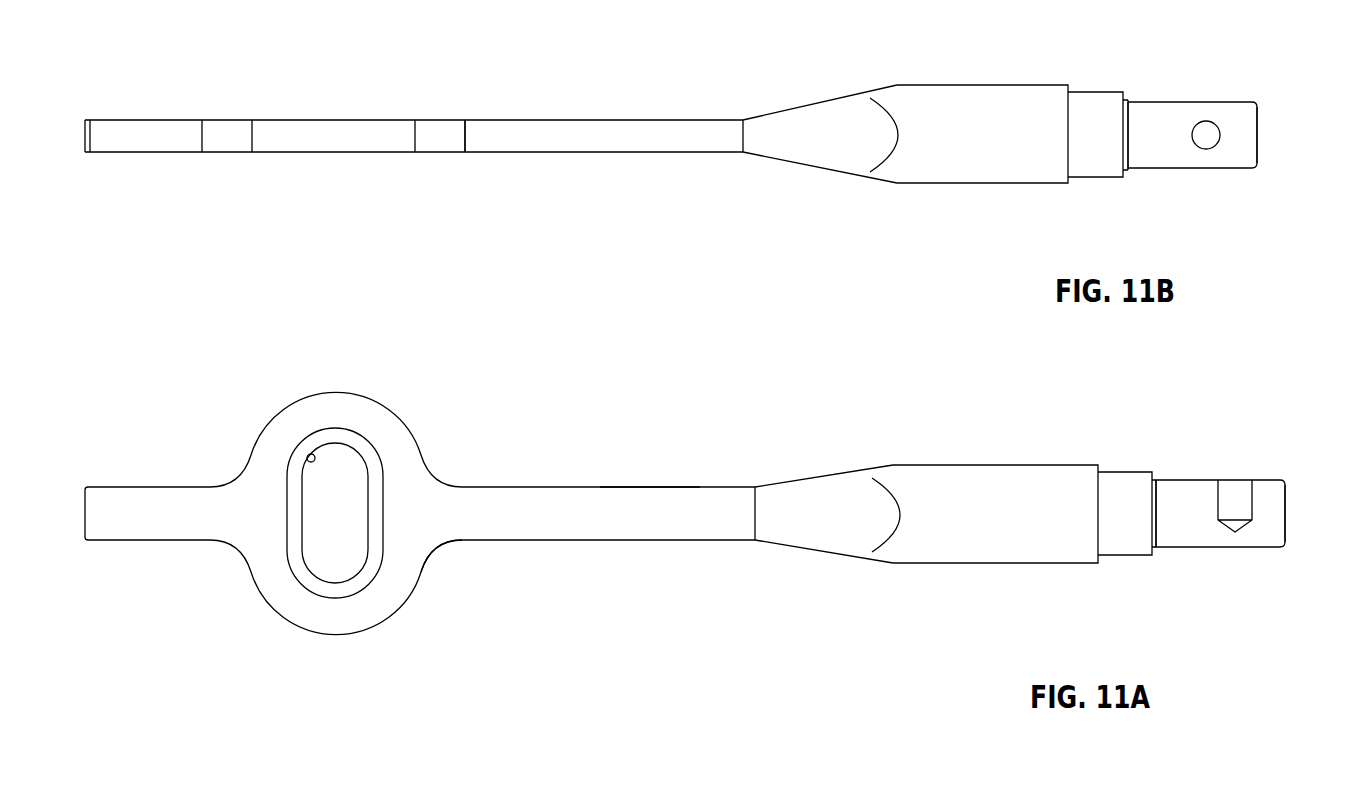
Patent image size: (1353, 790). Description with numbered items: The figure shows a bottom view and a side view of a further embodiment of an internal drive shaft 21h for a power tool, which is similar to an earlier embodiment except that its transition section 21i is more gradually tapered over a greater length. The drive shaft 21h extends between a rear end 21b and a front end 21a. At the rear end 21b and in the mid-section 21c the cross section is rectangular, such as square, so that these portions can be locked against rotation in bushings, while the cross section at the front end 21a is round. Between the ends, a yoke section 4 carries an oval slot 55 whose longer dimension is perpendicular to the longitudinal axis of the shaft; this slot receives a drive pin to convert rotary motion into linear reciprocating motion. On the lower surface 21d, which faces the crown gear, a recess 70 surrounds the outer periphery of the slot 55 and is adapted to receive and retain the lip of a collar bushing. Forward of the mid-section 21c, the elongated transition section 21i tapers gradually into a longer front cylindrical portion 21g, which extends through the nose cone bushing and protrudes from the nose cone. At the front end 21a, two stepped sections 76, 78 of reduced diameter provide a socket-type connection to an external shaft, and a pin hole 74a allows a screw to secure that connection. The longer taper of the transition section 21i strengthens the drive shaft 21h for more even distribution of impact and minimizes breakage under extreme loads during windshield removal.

In FIG. 11A, the yoke section 4 is at (365, 405).
In FIG. 11B, the front end 21a is at (1253, 96).
In FIG. 11A, the front end 21a is at (1288, 528).
In FIG. 11B, the rear end 21b is at (90, 112).
In FIG. 11A, the rear end 21b is at (88, 545).
In FIG. 11B, the mid-section 21c is at (622, 140).
In FIG. 11A, the mid-section 21c is at (620, 533).
In FIG. 11B, the lower surface 21d is at (843, 112).
In FIG. 11A, the lower surface 21d is at (427, 538).
In FIG. 11B, the front end cylindrical portion 21g is at (990, 95).
In FIG. 11A, the front end cylindrical portion 21g is at (1013, 468).
In FIG. 11B, the drive shaft 21h is at (597, 125).
In FIG. 11A, the drive shaft 21h is at (627, 498).
In FIG. 11A, the transition section 21i is at (835, 497).
In FIG. 11A, the oval slot 55 is at (313, 452).
In FIG. 11A, the recess 70 is at (373, 468).
In FIG. 11B, the pin hole 74a is at (1210, 150).
In FIG. 11A, the pin hole 74a is at (1243, 497).
In FIG. 11B, the stepped section 76 is at (1097, 98).
In FIG. 11A, the stepped section 76 is at (1130, 547).
In FIG. 11B, the stepped section 78 is at (1162, 105).
In FIG. 11A, the stepped section 78 is at (1205, 535).